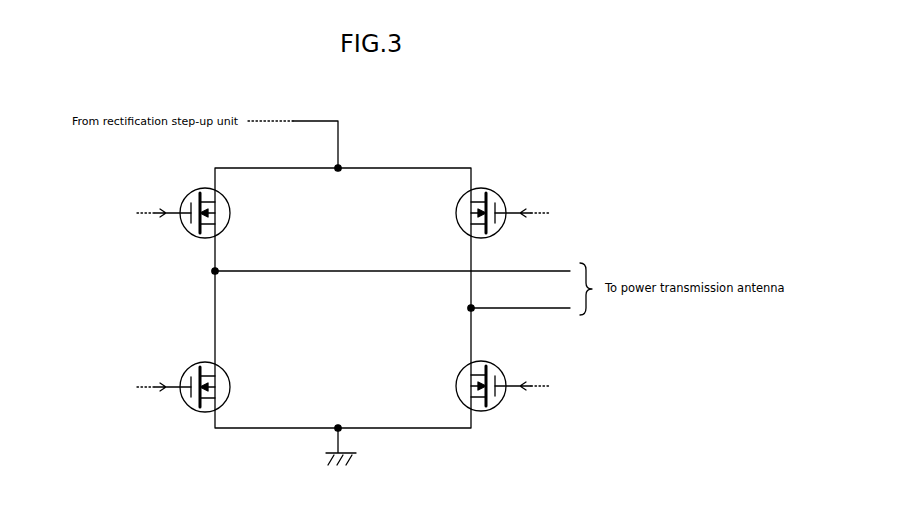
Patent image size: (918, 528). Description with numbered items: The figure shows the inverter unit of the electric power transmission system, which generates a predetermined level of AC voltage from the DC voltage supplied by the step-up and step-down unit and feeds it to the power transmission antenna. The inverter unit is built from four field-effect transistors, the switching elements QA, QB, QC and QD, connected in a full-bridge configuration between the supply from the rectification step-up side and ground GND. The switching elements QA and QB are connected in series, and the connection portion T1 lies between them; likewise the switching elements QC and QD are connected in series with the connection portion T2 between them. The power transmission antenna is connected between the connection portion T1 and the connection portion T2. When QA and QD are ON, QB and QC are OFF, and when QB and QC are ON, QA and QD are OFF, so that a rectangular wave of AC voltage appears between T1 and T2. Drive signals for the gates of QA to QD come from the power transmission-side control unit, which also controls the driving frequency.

The switching element QA is at (183, 213).
The switching element QB is at (183, 382).
The switching element QC is at (502, 213).
The switching element QD is at (502, 385).
The connection portion T1 is at (382, 273).
The connection portion T2 is at (506, 311).
The ground GND is at (340, 456).